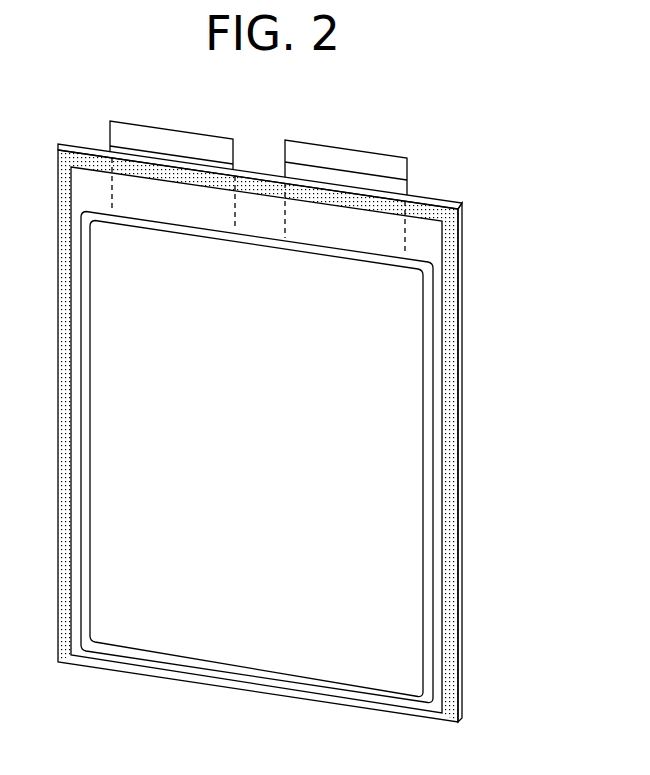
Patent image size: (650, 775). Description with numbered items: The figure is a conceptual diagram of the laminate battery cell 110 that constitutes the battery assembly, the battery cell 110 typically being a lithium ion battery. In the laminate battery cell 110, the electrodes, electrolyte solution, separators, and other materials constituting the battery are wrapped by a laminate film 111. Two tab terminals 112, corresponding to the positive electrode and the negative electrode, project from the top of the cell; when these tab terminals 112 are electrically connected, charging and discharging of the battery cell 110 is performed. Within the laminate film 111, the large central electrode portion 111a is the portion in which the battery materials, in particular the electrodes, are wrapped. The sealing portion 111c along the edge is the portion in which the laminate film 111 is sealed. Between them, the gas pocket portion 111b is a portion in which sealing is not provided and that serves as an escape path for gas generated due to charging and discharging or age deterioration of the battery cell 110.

The laminate battery cell 110 is at (299, 752).
The laminate film 111 is at (92, 147).
The electrode portion 111a is at (405, 391).
The gas pocket portion 111b is at (432, 249).
The sealing portion 111c is at (463, 212).
The tab terminal 112 is at (185, 130).